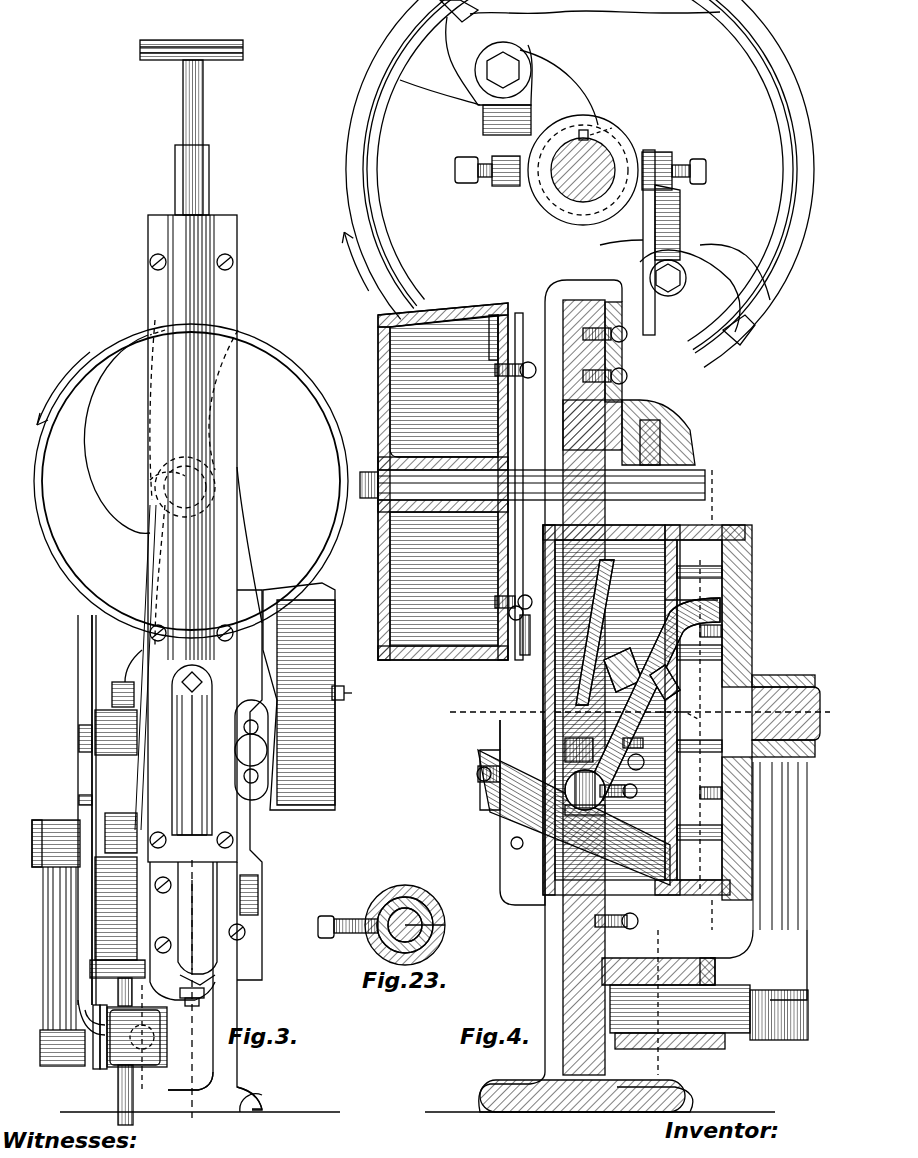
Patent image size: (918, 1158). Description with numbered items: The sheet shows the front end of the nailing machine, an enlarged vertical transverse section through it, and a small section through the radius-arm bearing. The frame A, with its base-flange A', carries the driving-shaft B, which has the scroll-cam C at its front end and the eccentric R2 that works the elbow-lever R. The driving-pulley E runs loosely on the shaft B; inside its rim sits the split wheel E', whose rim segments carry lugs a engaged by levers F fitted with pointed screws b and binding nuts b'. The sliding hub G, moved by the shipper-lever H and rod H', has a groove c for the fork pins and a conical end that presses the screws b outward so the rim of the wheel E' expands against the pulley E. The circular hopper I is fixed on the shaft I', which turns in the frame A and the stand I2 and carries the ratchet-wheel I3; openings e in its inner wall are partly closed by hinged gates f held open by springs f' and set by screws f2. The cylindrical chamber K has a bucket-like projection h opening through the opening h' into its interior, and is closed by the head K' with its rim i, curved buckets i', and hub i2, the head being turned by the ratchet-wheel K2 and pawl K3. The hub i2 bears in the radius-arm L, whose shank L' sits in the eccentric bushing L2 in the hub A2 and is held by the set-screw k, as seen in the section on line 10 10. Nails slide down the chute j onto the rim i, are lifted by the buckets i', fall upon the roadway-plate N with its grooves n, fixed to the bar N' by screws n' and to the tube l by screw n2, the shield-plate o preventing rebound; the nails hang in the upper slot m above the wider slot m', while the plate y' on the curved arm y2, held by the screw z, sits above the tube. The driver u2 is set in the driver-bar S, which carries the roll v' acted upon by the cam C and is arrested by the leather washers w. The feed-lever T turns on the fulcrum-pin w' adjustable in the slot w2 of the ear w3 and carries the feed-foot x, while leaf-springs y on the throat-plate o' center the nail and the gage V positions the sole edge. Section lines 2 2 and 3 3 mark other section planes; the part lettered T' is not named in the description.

In FIG. 3, the driver-bar S is at (205, 187).
In FIG. 3, the frame A is at (205, 666).
In FIG. 4, the frame A is at (586, 696).
In FIG. 3, the base-flange A' is at (222, 1092).
In FIG. 4, the base-flange A' is at (469, 1093).
In FIG. 3, the hub of the frame A2 is at (135, 1037).
In FIG. 4, the hub of the frame A2 is at (663, 995).
In FIG. 23, the hub of the frame A2 is at (405, 885).
In FIG. 3, the driving-shaft B is at (194, 482).
In FIG. 4, the driving-shaft B is at (583, 170).
In FIG. 3, the scroll-cam C is at (117, 434).
In FIG. 3, the driving-pulley E is at (191, 481).
In FIG. 4, the driving-pulley E is at (573, 183).
In FIG. 4, the second pulley or wheel E' is at (587, 175).
In FIG. 4, the lever F is at (593, 174).
In FIG. 4, the hub G is at (583, 168).
In FIG. 4, the shipper-lever H is at (640, 249).
In FIG. 3, the rod H' is at (111, 1095).
In FIG. 3, the circular hopper I is at (299, 696).
In FIG. 4, the circular hopper I is at (443, 481).
In FIG. 3, the hopper shaft I' is at (230, 694).
In FIG. 3, the stand I2 is at (135, 652).
In FIG. 4, the stand I2 is at (658, 432).
In FIG. 4, the ratchet-wheel I3 is at (651, 442).
In FIG. 3, the cylindrical chamber K is at (117, 810).
In FIG. 4, the cylindrical chamber K is at (611, 710).
In FIG. 3, the head K' is at (72, 751).
In FIG. 4, the head K' is at (720, 710).
In FIG. 3, the ratchet-wheel K2 is at (82, 803).
In FIG. 4, the ratchet-wheel K2 is at (752, 585).
In FIG. 3, the pawl K3 is at (82, 632).
In FIG. 3, the radius-arm L is at (52, 966).
In FIG. 4, the radius-arm L is at (766, 881).
In FIG. 3, the cylindrical shank L' is at (112, 1047).
In FIG. 4, the cylindrical shank L' is at (709, 1012).
In FIG. 23, the cylindrical shank L' is at (405, 925).
In FIG. 3, the eccentric bushing L2 is at (91, 1011).
In FIG. 4, the eccentric bushing L2 is at (696, 963).
In FIG. 23, the eccentric bushing L2 is at (445, 925).
In FIG. 4, the inclined roadway-plate N is at (653, 699).
In FIG. 4, the bar N' is at (672, 682).
In FIG. 3, the elbow-lever R is at (130, 679).
In FIG. 3, the eccentric R2 is at (160, 478).
In FIG. 3, the feed-lever T is at (248, 785).
In FIG. 4, the feed-lever T is at (498, 765).
In FIG. 4, the shaft T' is at (532, 485).
In FIG. 3, the adjustable gage V is at (205, 995).
In FIG. 4, the lug a is at (597, 172).
In FIG. 4, the round-pointed steel screw b is at (585, 160).
In FIG. 4, the check-nut b' is at (578, 169).
In FIG. 4, the circumferential groove c is at (616, 132).
In FIG. 4, the opening e is at (505, 346).
In FIG. 4, the hinged gate f is at (571, 485).
In FIG. 4, the spring f' is at (527, 647).
In FIG. 4, the adjusting screw f2 is at (504, 478).
In FIG. 3, the bucket-like projection h is at (256, 895).
In FIG. 4, the bucket-like projection h is at (481, 785).
In FIG. 4, the opening h' is at (534, 765).
In FIG. 4, the rim i is at (700, 708).
In FIG. 4, the curved buckets i' is at (699, 715).
In FIG. 3, the hub i2 is at (46, 843).
In FIG. 4, the hub i2 is at (786, 716).
In FIG. 4, the inclined chute j is at (574, 817).
In FIG. 3, the set-screw k is at (142, 1033).
In FIG. 4, the set-screw k is at (616, 921).
In FIG. 23, the set-screw k is at (326, 916).
In FIG. 4, the tube l is at (578, 795).
In FIG. 4, the slot m is at (578, 780).
In FIG. 4, the slot m' is at (587, 822).
In FIG. 4, the grooves or roadways n is at (691, 593).
In FIG. 4, the screws n' is at (680, 711).
In FIG. 4, the screw n2 is at (638, 791).
In FIG. 4, the shield-plate o is at (609, 632).
In FIG. 3, the throat-plate o' is at (188, 925).
In FIG. 3, the driver u2 is at (190, 760).
In FIG. 3, the anti-friction roll v' is at (164, 318).
In FIG. 3, the leather washers w is at (201, 850).
In FIG. 3, the fulcrum-pin w' is at (251, 750).
In FIG. 3, the slot w2 is at (253, 785).
In FIG. 3, the ear w3 is at (250, 721).
In FIG. 3, the feed-foot x is at (204, 977).
In FIG. 4, the feed-foot x is at (522, 812).
In FIG. 3, the leaf-springs y is at (189, 930).
In FIG. 4, the plate y' is at (599, 723).
In FIG. 4, the curved arm y2 is at (602, 740).
In FIG. 4, the screw z is at (644, 762).
In FIG. 4, the section line 2 2 is at (636, 712).
In FIG. 4, the section line 3 3 is at (716, 701).
In FIG. 3, the section line 10 10 is at (134, 1034).
In FIG. 4, the section line 10 10 is at (656, 1000).